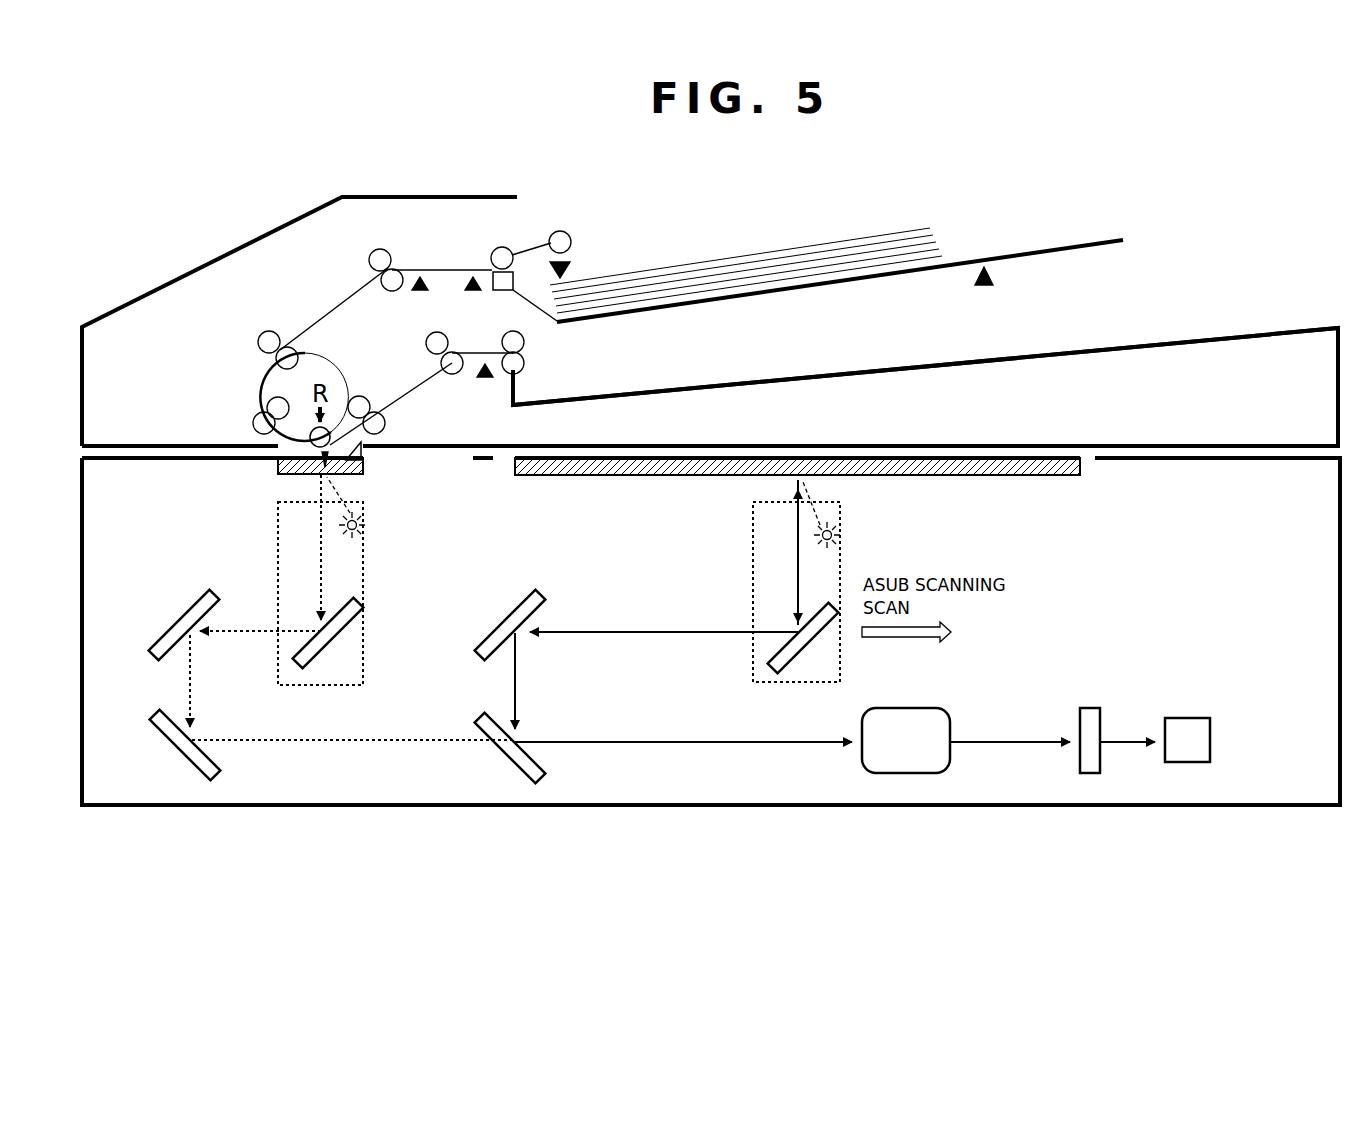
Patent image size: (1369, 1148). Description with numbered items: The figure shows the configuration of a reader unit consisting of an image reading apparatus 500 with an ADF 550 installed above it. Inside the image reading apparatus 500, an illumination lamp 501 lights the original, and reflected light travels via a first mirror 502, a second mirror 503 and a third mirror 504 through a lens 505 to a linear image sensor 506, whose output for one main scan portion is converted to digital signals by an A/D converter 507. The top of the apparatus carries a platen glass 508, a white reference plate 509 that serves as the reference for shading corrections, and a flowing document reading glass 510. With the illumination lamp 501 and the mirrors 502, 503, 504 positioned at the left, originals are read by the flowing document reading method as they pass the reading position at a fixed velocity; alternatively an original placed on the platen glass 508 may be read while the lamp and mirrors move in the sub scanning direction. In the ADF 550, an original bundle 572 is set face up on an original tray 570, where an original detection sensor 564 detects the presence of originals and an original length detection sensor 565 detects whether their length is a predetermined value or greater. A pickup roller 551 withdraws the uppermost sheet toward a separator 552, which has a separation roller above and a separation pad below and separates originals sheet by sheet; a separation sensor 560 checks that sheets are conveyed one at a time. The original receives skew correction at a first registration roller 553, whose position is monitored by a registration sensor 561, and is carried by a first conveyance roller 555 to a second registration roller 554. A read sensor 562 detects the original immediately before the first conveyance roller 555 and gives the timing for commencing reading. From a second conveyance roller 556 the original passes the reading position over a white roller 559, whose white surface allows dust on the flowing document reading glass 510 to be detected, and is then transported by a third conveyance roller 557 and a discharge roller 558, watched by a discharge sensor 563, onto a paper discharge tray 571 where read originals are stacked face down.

The image reading apparatus 500 is at (110, 808).
The illumination lamp 501 is at (365, 522).
The first mirror 502 is at (343, 647).
The second mirror 503 is at (183, 615).
The third mirror 504 is at (177, 760).
The lens 505 is at (897, 708).
The linear image sensor 506 is at (1083, 708).
The A/D converter 507 is at (1180, 718).
The platen glass 508 is at (1033, 477).
The white reference plate 509 is at (428, 460).
The flowing document reading glass 510 is at (278, 467).
The ADF 550 is at (221, 201).
The pickup roller 551 is at (552, 237).
The separator 552 is at (492, 258).
The first registration roller 553 is at (368, 262).
The second registration roller 554 is at (255, 342).
The first conveyance roller 555 is at (255, 430).
The second conveyance roller 556 is at (383, 433).
The third conveyance roller 557 is at (425, 350).
The discharge roller 558 is at (524, 345).
The white roller 559 is at (327, 430).
The separation sensor 560 is at (475, 300).
The registration sensor 561 is at (419, 300).
The read sensor 562 is at (240, 391).
The discharge sensor 563 is at (484, 386).
The original detection sensor 564 is at (582, 262).
The original length detection sensor 565 is at (978, 287).
The original tray 570 is at (997, 255).
The paper discharge tray 571 is at (846, 370).
The original bundle 572 is at (773, 255).